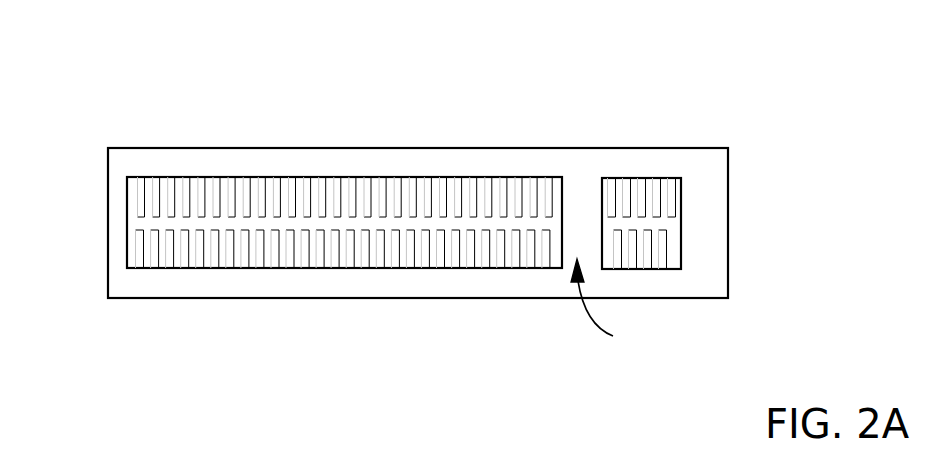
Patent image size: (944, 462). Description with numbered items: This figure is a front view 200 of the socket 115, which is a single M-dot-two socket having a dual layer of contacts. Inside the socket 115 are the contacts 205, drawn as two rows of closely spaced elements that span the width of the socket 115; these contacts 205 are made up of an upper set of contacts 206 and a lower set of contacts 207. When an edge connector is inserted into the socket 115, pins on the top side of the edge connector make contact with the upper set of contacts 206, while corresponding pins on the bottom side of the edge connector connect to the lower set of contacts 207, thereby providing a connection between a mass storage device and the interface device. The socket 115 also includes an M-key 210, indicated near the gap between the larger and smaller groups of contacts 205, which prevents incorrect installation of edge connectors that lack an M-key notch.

The front view 200 is at (763, 61).
The socket 115 is at (188, 148).
The contacts 205 is at (118, 171).
The upper set of contacts 206 is at (314, 177).
The lower set of contacts 207 is at (247, 268).
The M-key 210 is at (618, 303).